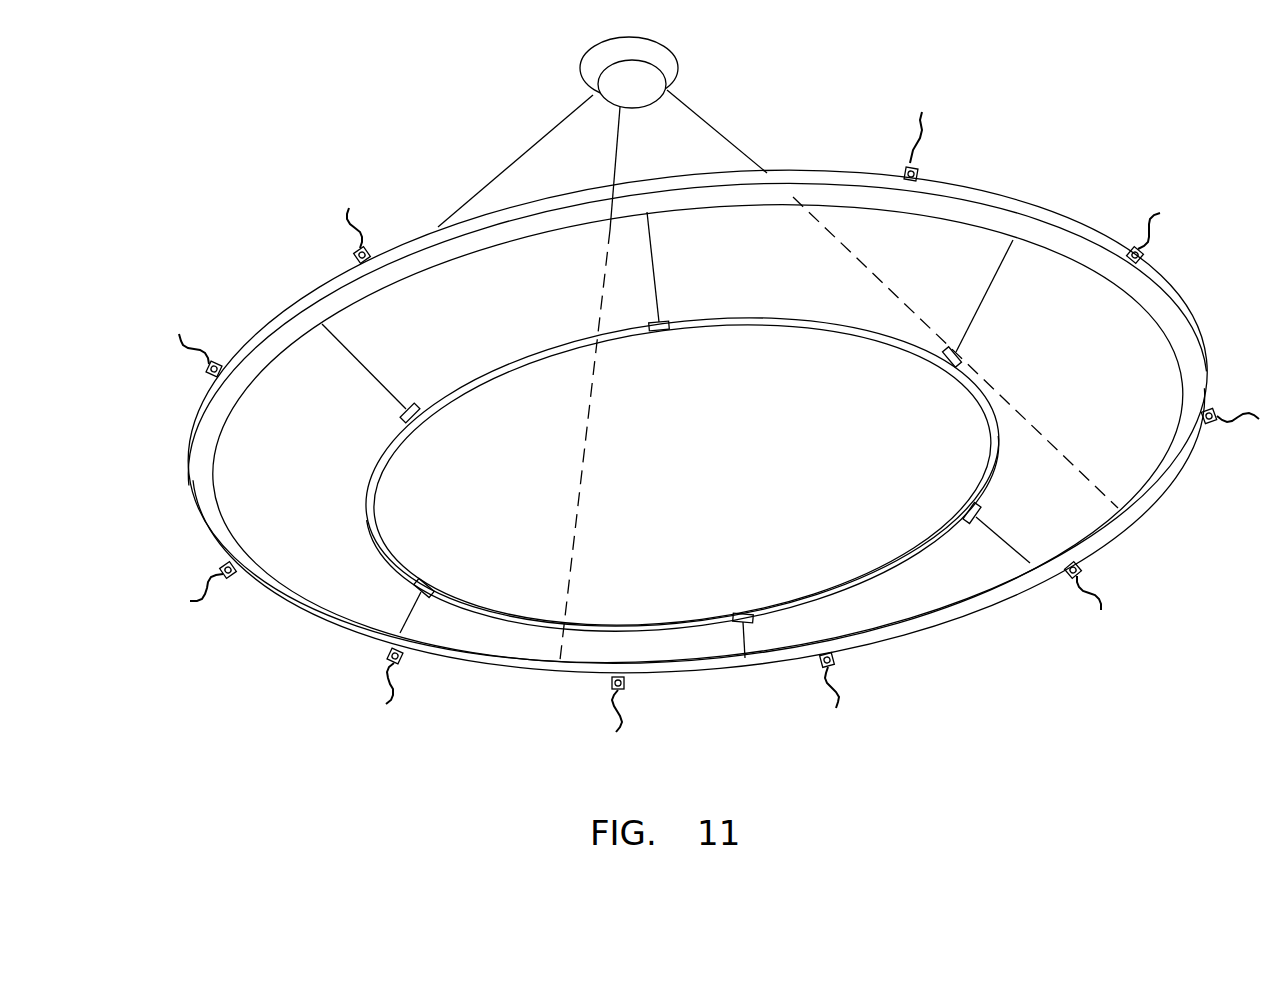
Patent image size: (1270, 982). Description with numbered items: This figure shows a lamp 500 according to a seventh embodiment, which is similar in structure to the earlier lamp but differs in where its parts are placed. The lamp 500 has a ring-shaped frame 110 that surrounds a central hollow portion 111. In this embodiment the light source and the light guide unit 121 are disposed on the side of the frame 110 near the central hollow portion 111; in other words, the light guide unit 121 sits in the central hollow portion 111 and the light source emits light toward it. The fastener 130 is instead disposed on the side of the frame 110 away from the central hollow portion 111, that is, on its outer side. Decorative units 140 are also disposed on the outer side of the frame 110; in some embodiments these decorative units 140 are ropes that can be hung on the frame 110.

The lamp 500 is at (236, 224).
The frame 110 is at (342, 623).
The central hollow portion 111 is at (502, 578).
The light guide unit 121 is at (728, 642).
The fastener 130 is at (922, 177).
The decorative units 140 is at (920, 138).